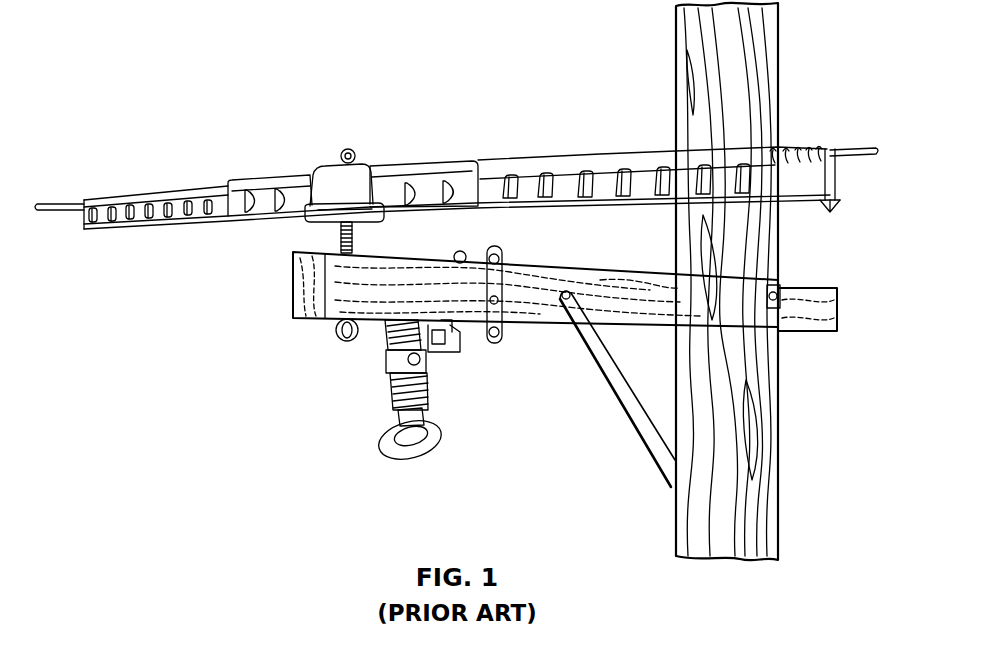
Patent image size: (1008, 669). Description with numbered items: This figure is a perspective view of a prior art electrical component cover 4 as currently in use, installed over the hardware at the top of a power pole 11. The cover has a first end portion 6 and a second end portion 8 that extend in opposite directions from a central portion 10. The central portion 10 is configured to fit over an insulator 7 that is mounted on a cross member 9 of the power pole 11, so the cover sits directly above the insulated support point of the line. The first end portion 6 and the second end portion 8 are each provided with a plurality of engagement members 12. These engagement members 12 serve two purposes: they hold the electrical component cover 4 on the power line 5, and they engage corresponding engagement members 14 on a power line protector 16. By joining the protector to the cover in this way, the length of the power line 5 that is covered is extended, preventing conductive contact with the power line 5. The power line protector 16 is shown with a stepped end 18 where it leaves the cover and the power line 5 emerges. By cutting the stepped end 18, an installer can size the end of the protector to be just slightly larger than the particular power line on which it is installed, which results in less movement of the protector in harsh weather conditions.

The electrical component cover 4 is at (540, 102).
The power line 5 is at (63, 207).
The first end portion 6 is at (235, 183).
The insulator 7 is at (326, 216).
The second end portion 8 is at (468, 158).
The cross member 9 is at (637, 310).
The central portion 10 is at (352, 183).
The power pole 11 is at (760, 232).
The engagement members 12 is at (245, 222).
The engagement members 14 is at (170, 229).
The power line protector 16 is at (165, 197).
The stepped end 18 is at (796, 145).